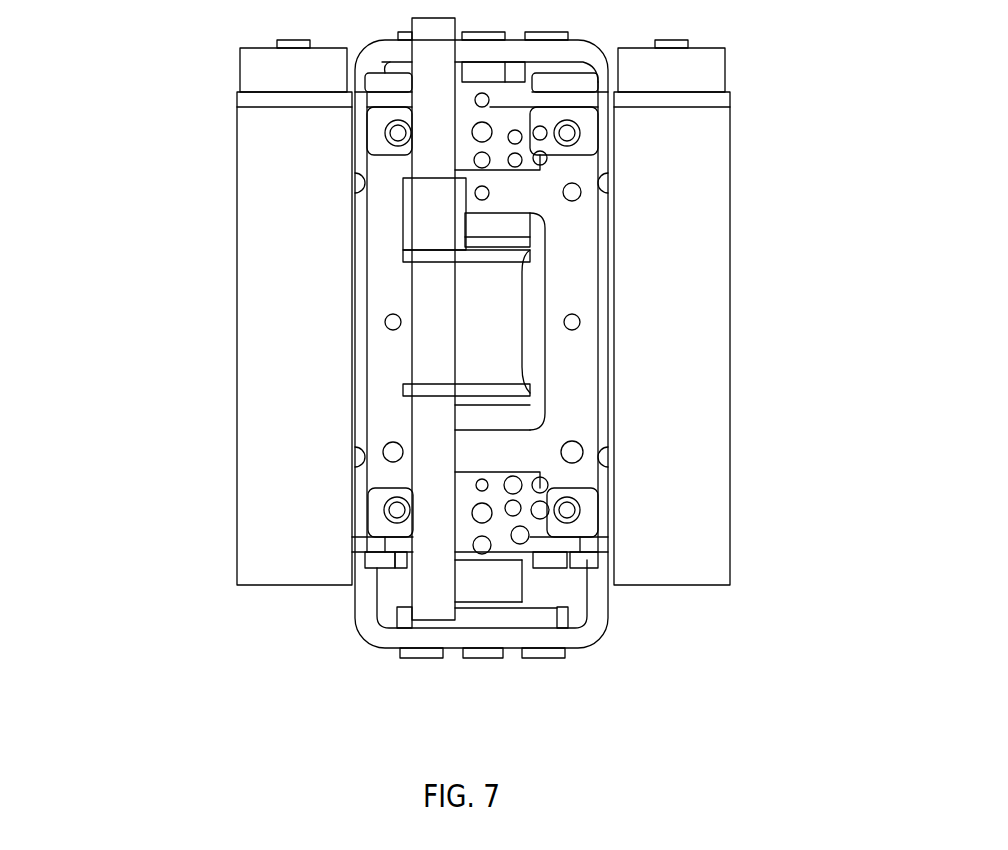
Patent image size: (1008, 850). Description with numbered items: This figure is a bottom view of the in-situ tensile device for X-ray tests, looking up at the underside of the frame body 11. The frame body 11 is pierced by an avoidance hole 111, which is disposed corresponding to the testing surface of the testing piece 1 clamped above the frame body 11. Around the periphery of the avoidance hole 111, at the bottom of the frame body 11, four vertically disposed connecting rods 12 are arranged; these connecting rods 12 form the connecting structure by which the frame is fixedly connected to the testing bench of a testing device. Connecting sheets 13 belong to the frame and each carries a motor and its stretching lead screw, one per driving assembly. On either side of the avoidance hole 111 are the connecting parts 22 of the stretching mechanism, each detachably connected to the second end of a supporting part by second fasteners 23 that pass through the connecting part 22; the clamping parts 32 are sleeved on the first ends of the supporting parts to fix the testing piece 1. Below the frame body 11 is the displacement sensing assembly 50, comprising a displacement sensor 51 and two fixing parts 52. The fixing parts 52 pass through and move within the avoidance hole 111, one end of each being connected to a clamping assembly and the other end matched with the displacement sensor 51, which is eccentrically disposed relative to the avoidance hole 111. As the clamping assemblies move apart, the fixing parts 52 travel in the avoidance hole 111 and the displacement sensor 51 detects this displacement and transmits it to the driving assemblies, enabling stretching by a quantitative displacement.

The testing piece 1 is at (483, 283).
The frame body 11 is at (570, 240).
The avoidance hole 111 is at (547, 407).
The connecting rod 12 is at (567, 137).
The connecting sheet 13 is at (700, 98).
The connecting part 22 is at (387, 635).
The second fastener 23 is at (547, 653).
The clamping part 32 is at (512, 538).
The displacement sensing assembly 50 is at (112, 300).
The displacement sensor 51 is at (428, 460).
The fixing part 52 is at (428, 393).